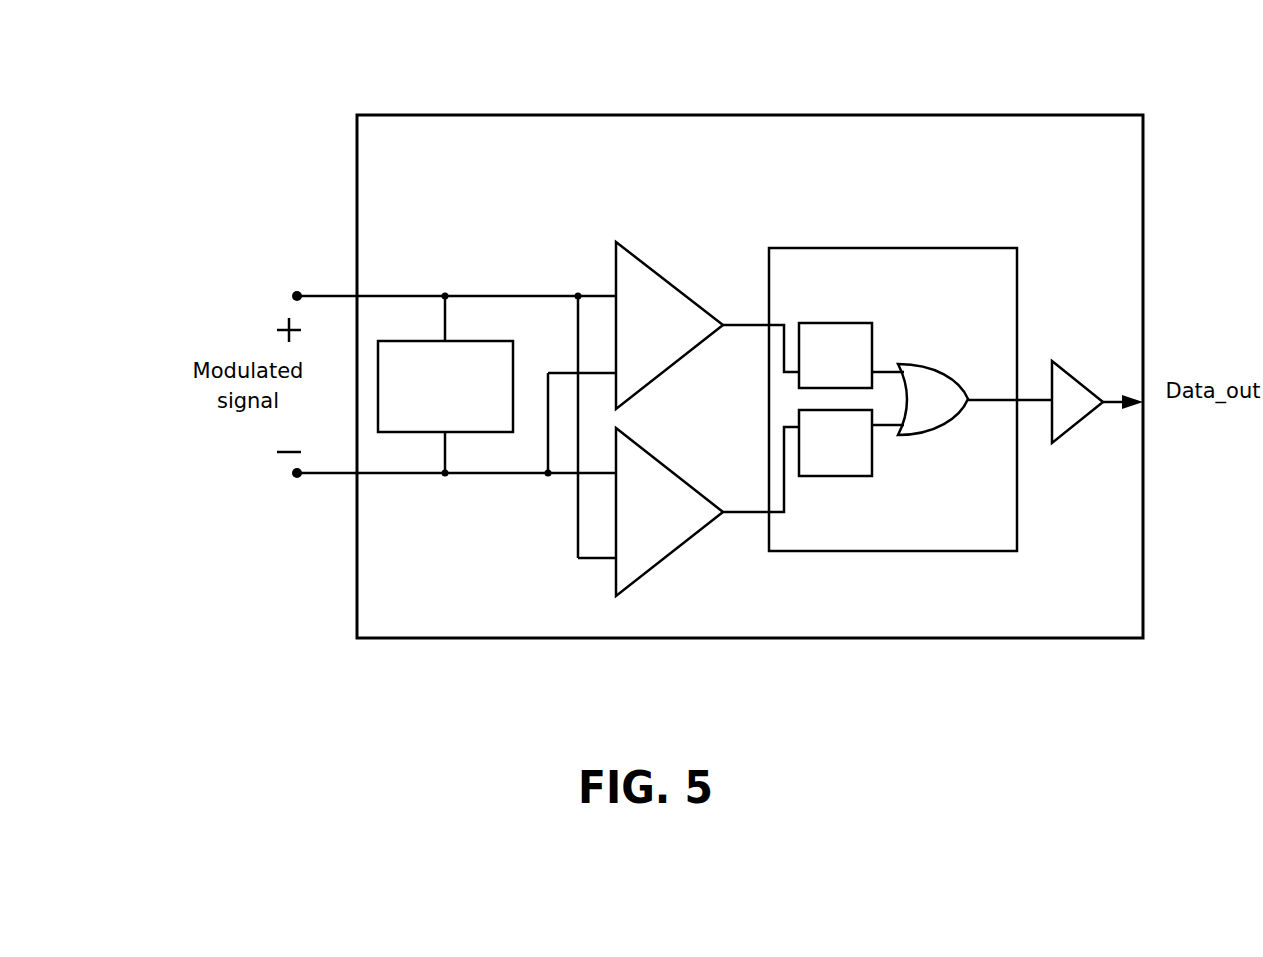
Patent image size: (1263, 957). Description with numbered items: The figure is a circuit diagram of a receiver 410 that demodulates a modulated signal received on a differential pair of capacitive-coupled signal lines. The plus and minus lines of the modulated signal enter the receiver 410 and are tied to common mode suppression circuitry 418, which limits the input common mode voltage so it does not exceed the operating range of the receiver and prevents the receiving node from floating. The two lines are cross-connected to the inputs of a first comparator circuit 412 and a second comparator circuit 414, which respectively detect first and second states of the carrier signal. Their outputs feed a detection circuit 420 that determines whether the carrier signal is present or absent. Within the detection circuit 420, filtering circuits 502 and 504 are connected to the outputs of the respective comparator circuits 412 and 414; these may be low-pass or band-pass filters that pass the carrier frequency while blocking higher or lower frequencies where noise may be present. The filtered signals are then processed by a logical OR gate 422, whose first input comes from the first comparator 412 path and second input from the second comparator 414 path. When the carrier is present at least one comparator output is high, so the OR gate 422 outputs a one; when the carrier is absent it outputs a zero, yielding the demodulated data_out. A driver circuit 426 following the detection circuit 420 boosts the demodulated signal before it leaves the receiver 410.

The receiver 410 is at (398, 115).
The first comparator circuit 412 is at (616, 262).
The second comparator circuit 414 is at (670, 553).
The common mode suppression circuitry 418 is at (478, 341).
The detection circuit 420 is at (860, 248).
The logical OR gate 422 is at (946, 432).
The driver circuit 426 is at (1080, 378).
The filtering circuit 502 is at (875, 333).
The filtering circuit 504 is at (823, 476).